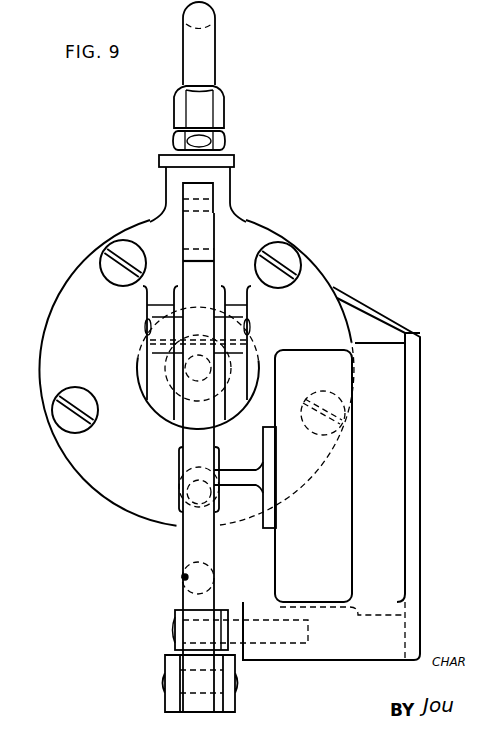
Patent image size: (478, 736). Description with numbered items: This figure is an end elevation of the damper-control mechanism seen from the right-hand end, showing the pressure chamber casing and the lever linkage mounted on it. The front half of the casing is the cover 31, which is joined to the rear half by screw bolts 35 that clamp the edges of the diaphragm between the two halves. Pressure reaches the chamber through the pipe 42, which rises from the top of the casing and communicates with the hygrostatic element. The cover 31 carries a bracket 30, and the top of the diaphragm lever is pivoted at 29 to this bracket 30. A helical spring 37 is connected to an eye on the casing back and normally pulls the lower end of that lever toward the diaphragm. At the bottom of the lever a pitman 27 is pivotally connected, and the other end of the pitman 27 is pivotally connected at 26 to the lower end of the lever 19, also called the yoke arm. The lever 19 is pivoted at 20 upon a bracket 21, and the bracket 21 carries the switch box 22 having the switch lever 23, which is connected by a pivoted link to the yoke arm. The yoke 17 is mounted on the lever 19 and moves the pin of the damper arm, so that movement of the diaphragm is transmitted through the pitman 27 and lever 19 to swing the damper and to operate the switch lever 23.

The pipe 42 is at (215, 40).
The yoke 17 is at (208, 189).
The cover 31 is at (312, 275).
The screw bolts 35 is at (282, 248).
The bracket 30 is at (162, 307).
The pivot 29 is at (148, 328).
The lever 19 is at (192, 435).
The switch lever 23 is at (235, 473).
The helical spring 37 is at (188, 563).
The bracket 21 is at (422, 355).
The switch box 22 is at (392, 444).
The pivot pin 20 is at (173, 630).
The pitman 27 is at (165, 660).
The pivotal connection 26 is at (162, 684).